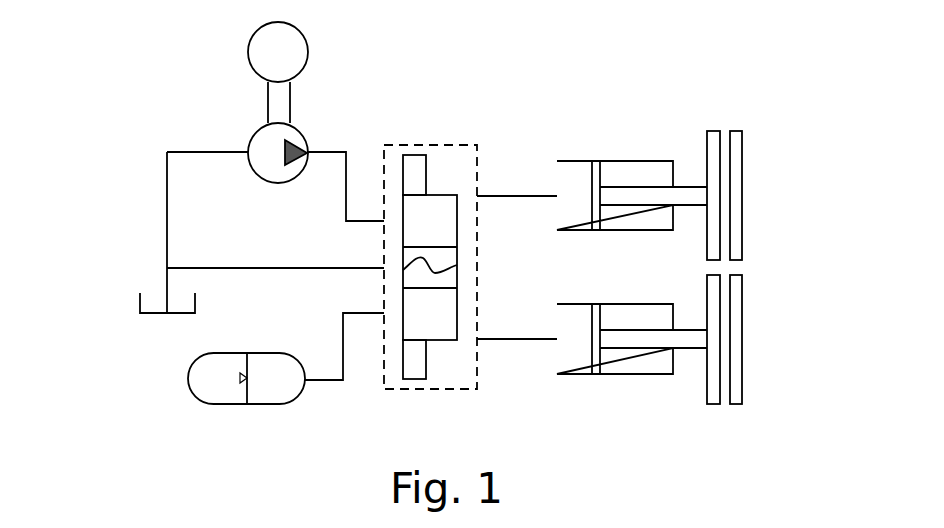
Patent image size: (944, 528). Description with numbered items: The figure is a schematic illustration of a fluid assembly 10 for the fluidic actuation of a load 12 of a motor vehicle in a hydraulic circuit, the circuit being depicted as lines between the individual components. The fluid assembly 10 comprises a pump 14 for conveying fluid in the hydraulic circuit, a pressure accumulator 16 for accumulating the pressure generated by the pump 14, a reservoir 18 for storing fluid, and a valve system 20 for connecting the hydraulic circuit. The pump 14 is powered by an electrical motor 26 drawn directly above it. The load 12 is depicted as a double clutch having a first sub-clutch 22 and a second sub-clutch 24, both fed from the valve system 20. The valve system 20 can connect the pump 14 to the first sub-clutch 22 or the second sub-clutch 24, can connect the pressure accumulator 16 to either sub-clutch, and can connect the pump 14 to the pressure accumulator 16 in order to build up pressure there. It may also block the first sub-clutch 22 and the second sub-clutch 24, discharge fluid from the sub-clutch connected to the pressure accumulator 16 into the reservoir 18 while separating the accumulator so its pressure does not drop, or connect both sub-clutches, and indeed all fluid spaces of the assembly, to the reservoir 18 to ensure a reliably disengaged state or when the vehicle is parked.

The fluid assembly 10 is at (644, 231).
The load 12 is at (757, 102).
The pump 14 is at (307, 138).
The pressure accumulator 16 is at (215, 404).
The reservoir 18 is at (148, 315).
The valve system 20 is at (447, 145).
The first sub-clutch 22 is at (742, 128).
The second sub-clutch 24 is at (742, 408).
The electrical motor 26 is at (307, 33).